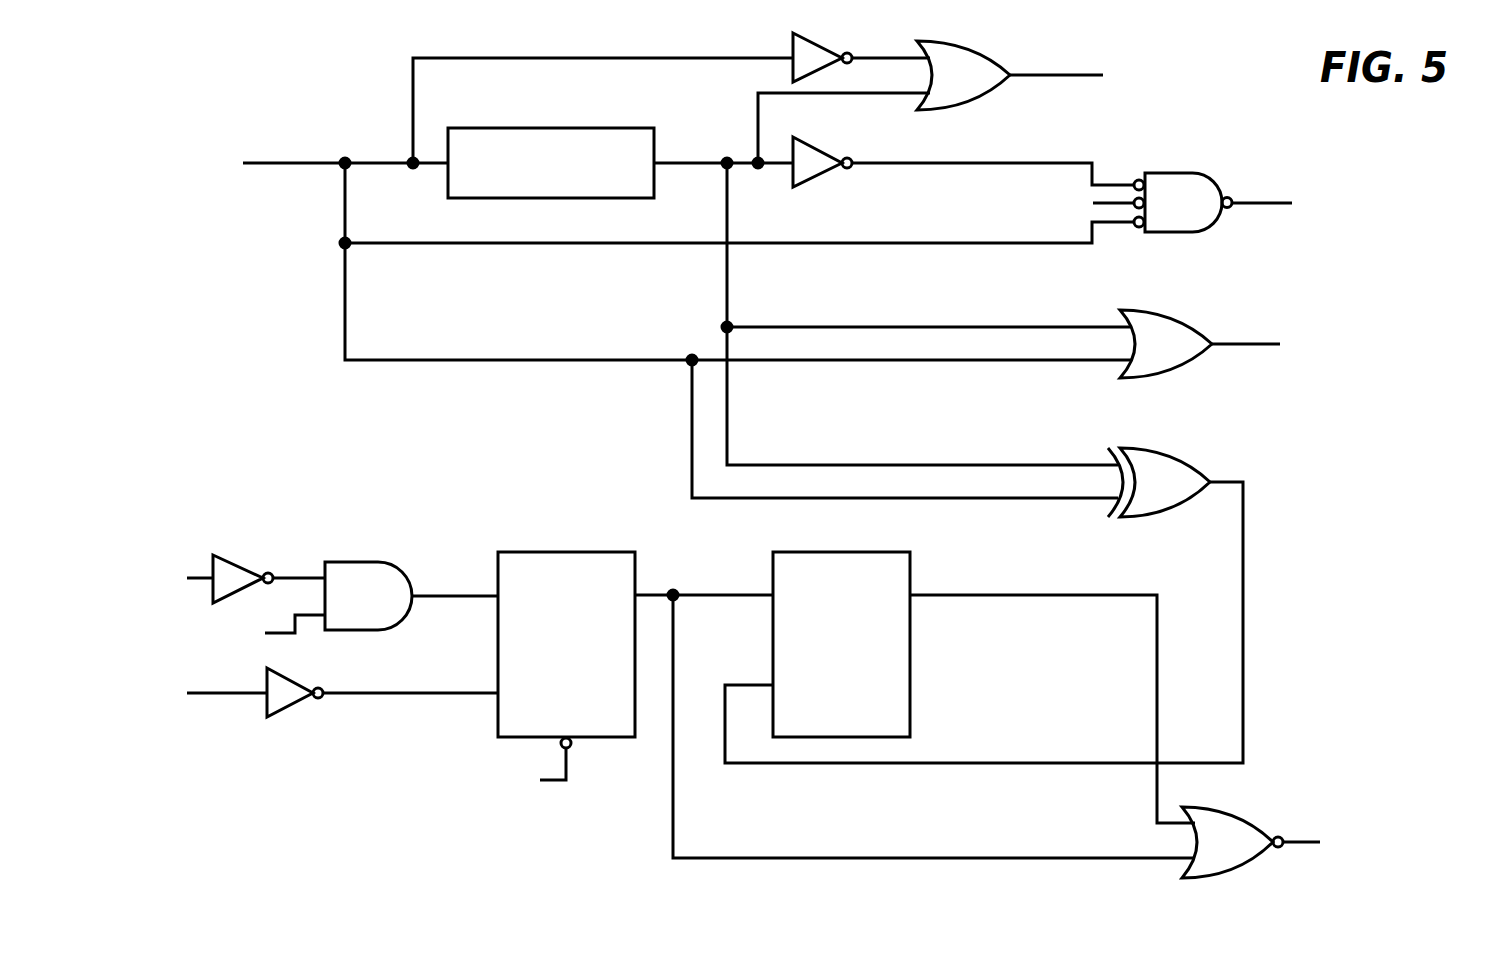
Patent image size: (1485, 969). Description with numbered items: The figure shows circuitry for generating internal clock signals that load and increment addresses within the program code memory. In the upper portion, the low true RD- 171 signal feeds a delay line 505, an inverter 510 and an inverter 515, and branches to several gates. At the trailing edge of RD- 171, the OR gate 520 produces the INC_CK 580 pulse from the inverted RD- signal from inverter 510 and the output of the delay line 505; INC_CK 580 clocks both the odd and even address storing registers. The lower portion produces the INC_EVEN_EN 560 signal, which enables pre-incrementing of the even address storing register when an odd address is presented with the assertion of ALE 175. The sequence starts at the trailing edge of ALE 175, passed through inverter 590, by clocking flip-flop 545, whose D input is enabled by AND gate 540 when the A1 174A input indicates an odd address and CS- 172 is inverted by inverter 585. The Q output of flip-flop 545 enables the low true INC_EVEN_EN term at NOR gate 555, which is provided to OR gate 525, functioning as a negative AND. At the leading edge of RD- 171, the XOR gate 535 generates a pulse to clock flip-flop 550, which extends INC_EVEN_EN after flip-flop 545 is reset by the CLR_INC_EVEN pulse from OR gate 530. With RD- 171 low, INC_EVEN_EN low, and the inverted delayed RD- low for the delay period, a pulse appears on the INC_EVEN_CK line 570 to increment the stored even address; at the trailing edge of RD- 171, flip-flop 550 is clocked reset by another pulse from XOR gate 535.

The RD- signal 171 is at (283, 163).
The delay line 505 is at (568, 128).
The inverter 510 is at (836, 40).
The inverter 515 is at (836, 145).
The OR gate 520 is at (970, 45).
The OR gate 525 is at (1168, 173).
The OR gate 530 is at (1168, 312).
The XOR gate 535 is at (1160, 450).
The AND gate 540 is at (365, 562).
The flip-flop 545 is at (555, 552).
The flip-flop 550 is at (900, 552).
The NOR gate 555 is at (1230, 808).
The INC_EVEN_EN signal 560 is at (1292, 845).
The INC_EVEN_CK line 570 is at (1258, 207).
The INC_CK pulse 580 is at (1040, 73).
The inverter 585 is at (237, 562).
The inverter 590 is at (290, 678).
The CS- signal 172 is at (200, 578).
The A1 input 174A is at (266, 633).
The ALE signal 175 is at (247, 693).